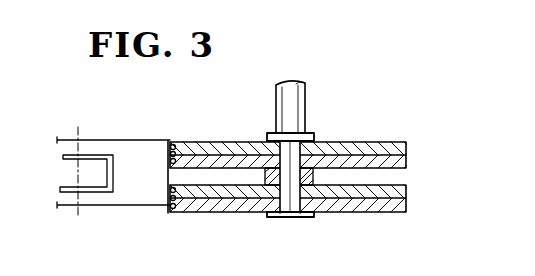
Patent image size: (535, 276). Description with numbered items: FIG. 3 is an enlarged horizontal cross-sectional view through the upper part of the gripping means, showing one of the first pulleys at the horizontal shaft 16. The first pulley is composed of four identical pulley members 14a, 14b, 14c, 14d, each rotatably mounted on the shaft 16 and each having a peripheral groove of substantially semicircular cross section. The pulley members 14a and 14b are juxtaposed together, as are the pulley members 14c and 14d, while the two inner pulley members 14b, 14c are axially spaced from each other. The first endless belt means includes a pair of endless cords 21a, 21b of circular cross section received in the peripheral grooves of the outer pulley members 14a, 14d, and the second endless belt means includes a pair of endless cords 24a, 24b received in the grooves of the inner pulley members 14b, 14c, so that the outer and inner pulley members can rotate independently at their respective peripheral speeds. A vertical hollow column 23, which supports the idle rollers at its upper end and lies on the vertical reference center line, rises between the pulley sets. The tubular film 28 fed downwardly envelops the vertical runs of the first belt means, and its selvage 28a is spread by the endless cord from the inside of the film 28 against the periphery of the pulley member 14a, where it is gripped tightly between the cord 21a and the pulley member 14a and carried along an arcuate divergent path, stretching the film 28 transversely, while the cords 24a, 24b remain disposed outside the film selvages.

The pulley member 14a is at (340, 205).
The pulley member 14b is at (380, 193).
The pulley member 14c is at (347, 142).
The pulley member 14d is at (395, 142).
The horizontal shaft 16 is at (285, 162).
The endless cord 21a is at (170, 210).
The endless cord 21b is at (170, 142).
The vertical hollow column 23 is at (78, 193).
The endless cord 24a is at (169, 198).
The endless cord 24b is at (170, 158).
The tubular film 28 is at (88, 139).
The selvage 28a is at (168, 173).